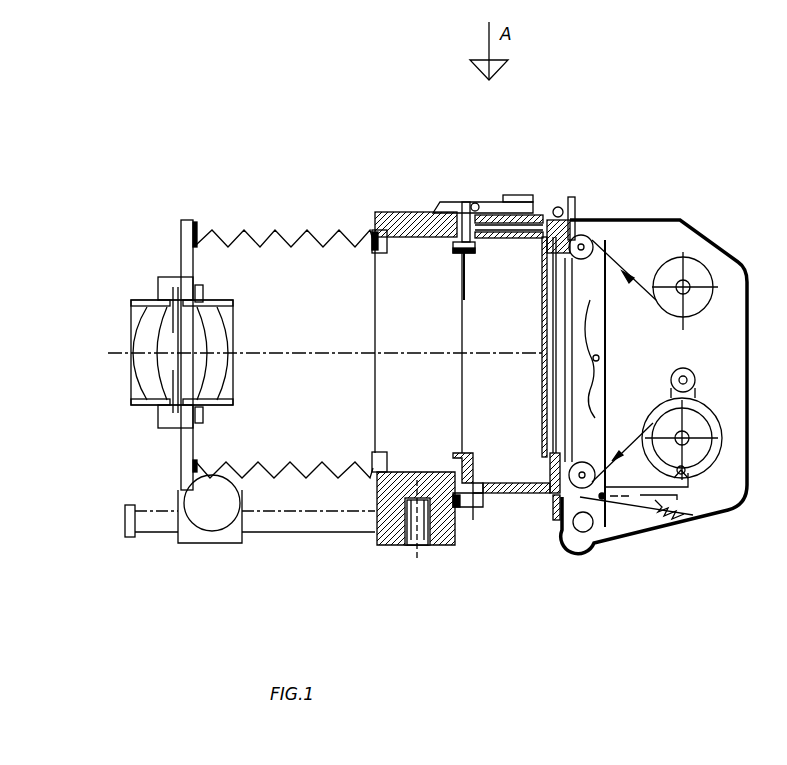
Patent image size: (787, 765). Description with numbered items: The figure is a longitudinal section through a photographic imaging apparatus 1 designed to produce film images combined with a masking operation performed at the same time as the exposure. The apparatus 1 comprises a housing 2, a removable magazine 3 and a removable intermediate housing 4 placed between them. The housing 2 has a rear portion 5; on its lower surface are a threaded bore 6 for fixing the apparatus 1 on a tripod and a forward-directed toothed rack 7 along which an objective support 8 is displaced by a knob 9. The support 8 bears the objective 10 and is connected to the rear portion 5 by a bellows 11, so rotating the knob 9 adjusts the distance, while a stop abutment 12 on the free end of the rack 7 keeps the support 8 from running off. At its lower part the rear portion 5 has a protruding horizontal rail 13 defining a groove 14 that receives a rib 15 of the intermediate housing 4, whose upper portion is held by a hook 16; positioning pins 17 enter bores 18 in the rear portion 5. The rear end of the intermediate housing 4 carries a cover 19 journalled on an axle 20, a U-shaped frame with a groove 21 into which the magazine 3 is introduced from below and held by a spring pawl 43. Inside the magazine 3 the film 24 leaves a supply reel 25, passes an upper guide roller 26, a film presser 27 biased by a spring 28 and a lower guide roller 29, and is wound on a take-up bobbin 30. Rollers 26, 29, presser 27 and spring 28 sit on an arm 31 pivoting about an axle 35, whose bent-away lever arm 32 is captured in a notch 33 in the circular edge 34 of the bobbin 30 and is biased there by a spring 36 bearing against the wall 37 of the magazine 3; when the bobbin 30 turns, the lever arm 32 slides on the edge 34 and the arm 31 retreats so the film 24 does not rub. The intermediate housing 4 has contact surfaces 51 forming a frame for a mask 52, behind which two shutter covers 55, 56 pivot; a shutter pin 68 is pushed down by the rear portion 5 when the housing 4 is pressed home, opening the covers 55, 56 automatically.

The photographic imaging apparatus 1 is at (404, 62).
The housing 2 is at (343, 148).
The removable magazine 3 is at (672, 162).
The intermediate housing 4 is at (526, 146).
The rear portion 5 is at (450, 547).
The threaded bore 6 is at (407, 540).
The toothed rack 7 is at (277, 525).
The objective support 8 is at (187, 442).
The knob 9 is at (205, 515).
The objective 10 is at (140, 377).
The bellows 11 is at (277, 228).
The stop abutment 12 is at (127, 523).
The horizontal rail 13 is at (473, 503).
The groove 14 is at (467, 503).
The rib 15 is at (470, 468).
The hook 16 is at (510, 177).
The positioning pins 17 is at (448, 243).
The bores 18 is at (457, 260).
The cover 19 is at (575, 215).
The axle 20 is at (556, 208).
The groove 21 is at (570, 198).
The film 24 is at (626, 270).
The supply reel 25 is at (697, 273).
The upper guide roller 26 is at (593, 242).
The film presser 27 is at (589, 325).
The spring 28 is at (601, 357).
The lower guide roller 29 is at (584, 462).
The take-up bobbin 30 is at (698, 410).
The arm 31 is at (597, 300).
The lever arm 32 is at (641, 498).
The notch 33 is at (690, 475).
The circular edge 34 is at (720, 425).
The axle 35 is at (603, 500).
The spring 36 is at (691, 515).
The wall 37 is at (748, 468).
The spring pawl 43 is at (582, 530).
The contact surfaces 51 is at (585, 220).
The mask 52 is at (548, 313).
The shutter cover 55 is at (548, 376).
The shutter cover 56 is at (548, 376).
The shutter pin 68 is at (470, 207).